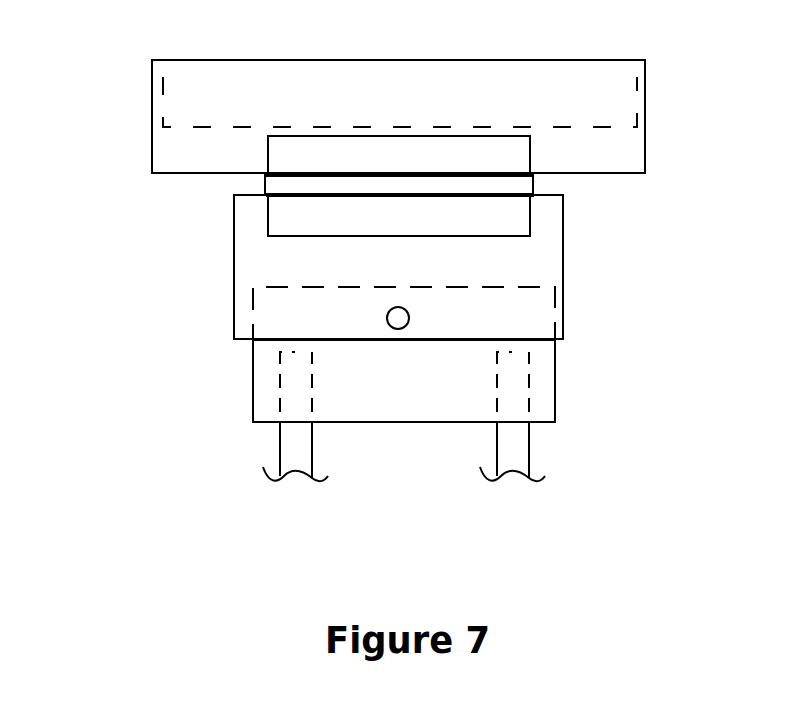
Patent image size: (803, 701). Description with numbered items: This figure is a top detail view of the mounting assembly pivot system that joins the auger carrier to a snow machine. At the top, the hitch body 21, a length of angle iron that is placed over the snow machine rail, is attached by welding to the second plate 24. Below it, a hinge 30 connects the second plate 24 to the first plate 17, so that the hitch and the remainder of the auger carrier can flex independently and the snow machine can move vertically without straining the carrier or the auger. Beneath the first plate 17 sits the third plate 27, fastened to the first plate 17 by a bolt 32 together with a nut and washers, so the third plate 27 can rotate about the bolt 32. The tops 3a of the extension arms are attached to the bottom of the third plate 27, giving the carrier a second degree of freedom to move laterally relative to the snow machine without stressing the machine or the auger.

The hitch body 21 is at (323, 83).
The second plate 24 is at (147, 140).
The hinge 30 is at (538, 184).
The first plate 17 is at (218, 254).
The bolt 32 is at (413, 325).
The third plate 27 is at (252, 384).
The tops of the extension arms 3a is at (317, 443).